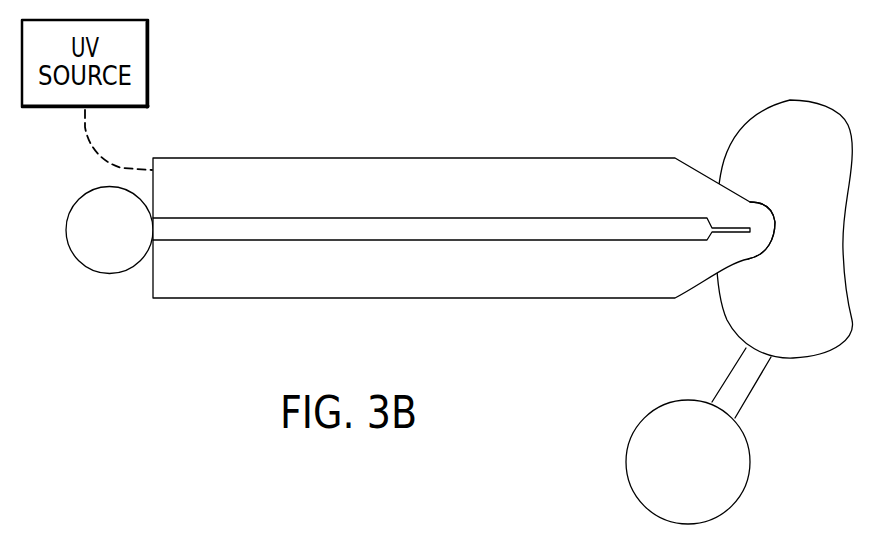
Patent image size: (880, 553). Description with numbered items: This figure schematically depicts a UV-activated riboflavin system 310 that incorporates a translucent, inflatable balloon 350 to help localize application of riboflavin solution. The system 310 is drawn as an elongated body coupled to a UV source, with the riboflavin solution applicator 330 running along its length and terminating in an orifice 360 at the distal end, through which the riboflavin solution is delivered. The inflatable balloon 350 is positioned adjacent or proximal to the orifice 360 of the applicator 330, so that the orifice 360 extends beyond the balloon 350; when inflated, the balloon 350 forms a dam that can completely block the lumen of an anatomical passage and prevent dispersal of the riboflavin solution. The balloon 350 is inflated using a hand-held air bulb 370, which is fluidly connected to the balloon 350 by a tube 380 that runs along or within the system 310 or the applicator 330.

The UV-activated riboflavin system 310 is at (440, 158).
The riboflavin solution applicator 330 is at (557, 236).
The inflatable balloon 350 is at (802, 118).
The orifice 360 is at (750, 203).
The hand-held air bulb 370 is at (688, 400).
The tube 380 is at (743, 380).